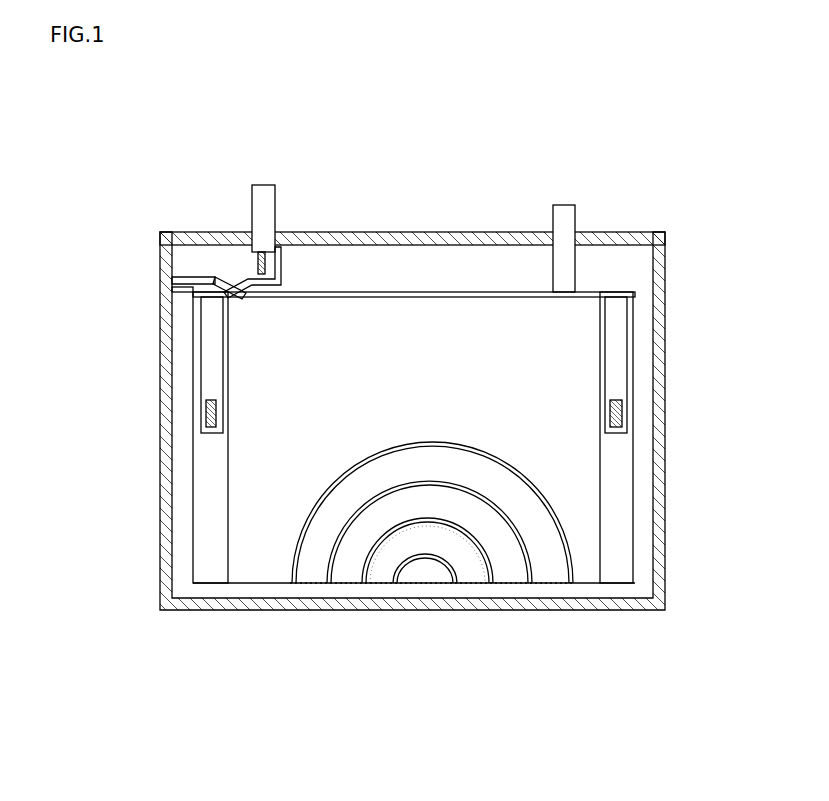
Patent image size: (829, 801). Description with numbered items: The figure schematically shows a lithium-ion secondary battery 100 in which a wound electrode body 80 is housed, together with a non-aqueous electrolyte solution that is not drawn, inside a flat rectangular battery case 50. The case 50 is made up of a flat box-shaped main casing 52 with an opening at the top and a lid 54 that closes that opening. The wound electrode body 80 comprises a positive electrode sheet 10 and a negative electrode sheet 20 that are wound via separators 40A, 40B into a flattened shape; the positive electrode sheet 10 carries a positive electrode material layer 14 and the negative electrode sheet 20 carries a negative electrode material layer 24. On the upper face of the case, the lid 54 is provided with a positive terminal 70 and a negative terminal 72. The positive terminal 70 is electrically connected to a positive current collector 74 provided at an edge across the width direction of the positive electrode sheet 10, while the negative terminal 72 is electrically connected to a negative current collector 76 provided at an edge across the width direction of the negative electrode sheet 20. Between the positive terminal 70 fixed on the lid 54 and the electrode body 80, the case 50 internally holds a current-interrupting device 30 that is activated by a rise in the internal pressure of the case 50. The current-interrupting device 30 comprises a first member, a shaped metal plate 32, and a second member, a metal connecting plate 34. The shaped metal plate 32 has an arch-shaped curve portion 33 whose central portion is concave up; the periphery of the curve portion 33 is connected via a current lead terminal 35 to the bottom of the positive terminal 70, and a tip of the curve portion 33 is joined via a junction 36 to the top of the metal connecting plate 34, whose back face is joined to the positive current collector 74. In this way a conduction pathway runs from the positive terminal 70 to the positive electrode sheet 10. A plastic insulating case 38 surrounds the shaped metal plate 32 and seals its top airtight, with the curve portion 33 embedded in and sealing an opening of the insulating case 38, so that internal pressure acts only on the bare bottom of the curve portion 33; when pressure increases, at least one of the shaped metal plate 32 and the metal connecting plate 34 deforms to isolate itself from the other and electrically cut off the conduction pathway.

The lithium-ion secondary battery 100 is at (662, 138).
The battery case 50 is at (665, 424).
The main casing 52 is at (665, 560).
The lid 54 is at (516, 232).
The positive terminal 70 is at (262, 184).
The negative terminal 72 is at (563, 214).
The current-interrupting device 30 is at (190, 264).
The shaped metal plate 32 is at (200, 283).
The curve portion 33 is at (175, 294).
The metal connecting plate 34 is at (270, 297).
The current lead terminal 35 is at (256, 268).
The junction 36 is at (235, 302).
The insulating case 38 is at (284, 262).
The positive current collector 74 is at (210, 356).
The negative current collector 76 is at (616, 312).
The wound electrode body 80 is at (405, 319).
The positive electrode sheet 10 is at (307, 564).
The positive electrode material layer 14 is at (398, 595).
The negative electrode sheet 20 is at (382, 580).
The negative electrode material layer 24 is at (427, 617).
The separator 40A is at (252, 562).
The separator 40B is at (347, 580).